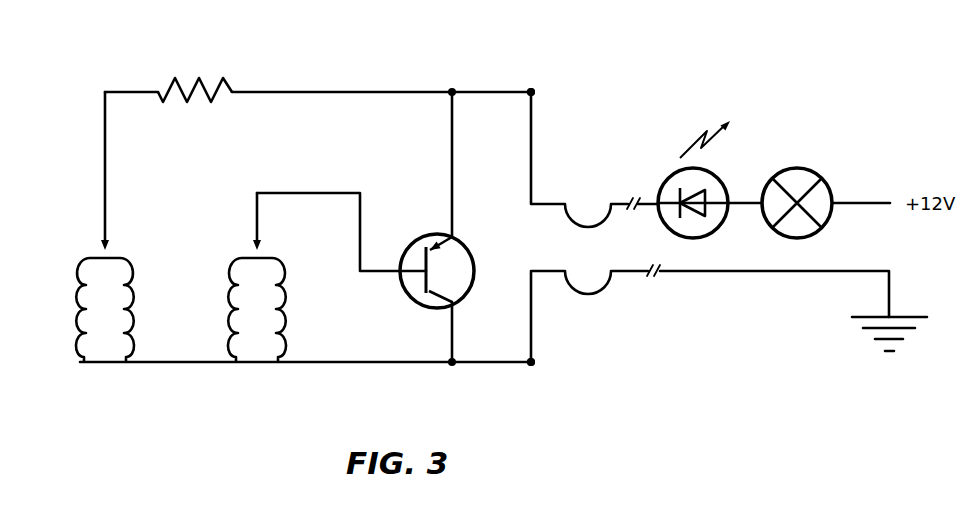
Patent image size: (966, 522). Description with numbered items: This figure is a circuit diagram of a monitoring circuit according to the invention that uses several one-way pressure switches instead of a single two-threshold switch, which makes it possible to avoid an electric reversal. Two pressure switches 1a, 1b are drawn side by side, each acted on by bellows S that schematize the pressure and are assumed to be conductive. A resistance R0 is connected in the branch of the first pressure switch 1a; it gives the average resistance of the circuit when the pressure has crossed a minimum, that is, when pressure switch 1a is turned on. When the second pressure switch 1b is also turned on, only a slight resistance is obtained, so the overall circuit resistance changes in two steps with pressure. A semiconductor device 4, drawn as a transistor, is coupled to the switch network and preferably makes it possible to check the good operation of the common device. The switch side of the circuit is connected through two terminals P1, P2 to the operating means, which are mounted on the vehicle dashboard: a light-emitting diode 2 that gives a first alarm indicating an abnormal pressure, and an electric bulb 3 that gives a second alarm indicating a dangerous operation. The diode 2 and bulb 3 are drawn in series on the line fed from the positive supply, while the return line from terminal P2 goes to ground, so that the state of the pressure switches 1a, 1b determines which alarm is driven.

The resistance R0 is at (194, 82).
The pressure switch 1a is at (96, 373).
The second pressure switch 1b is at (249, 374).
The bellows S is at (233, 313).
The semiconductor device 4 is at (468, 253).
The light-emitting diode 2 is at (665, 226).
The electric bulb 3 is at (803, 229).
The terminal P1 is at (535, 90).
The terminal P2 is at (535, 365).